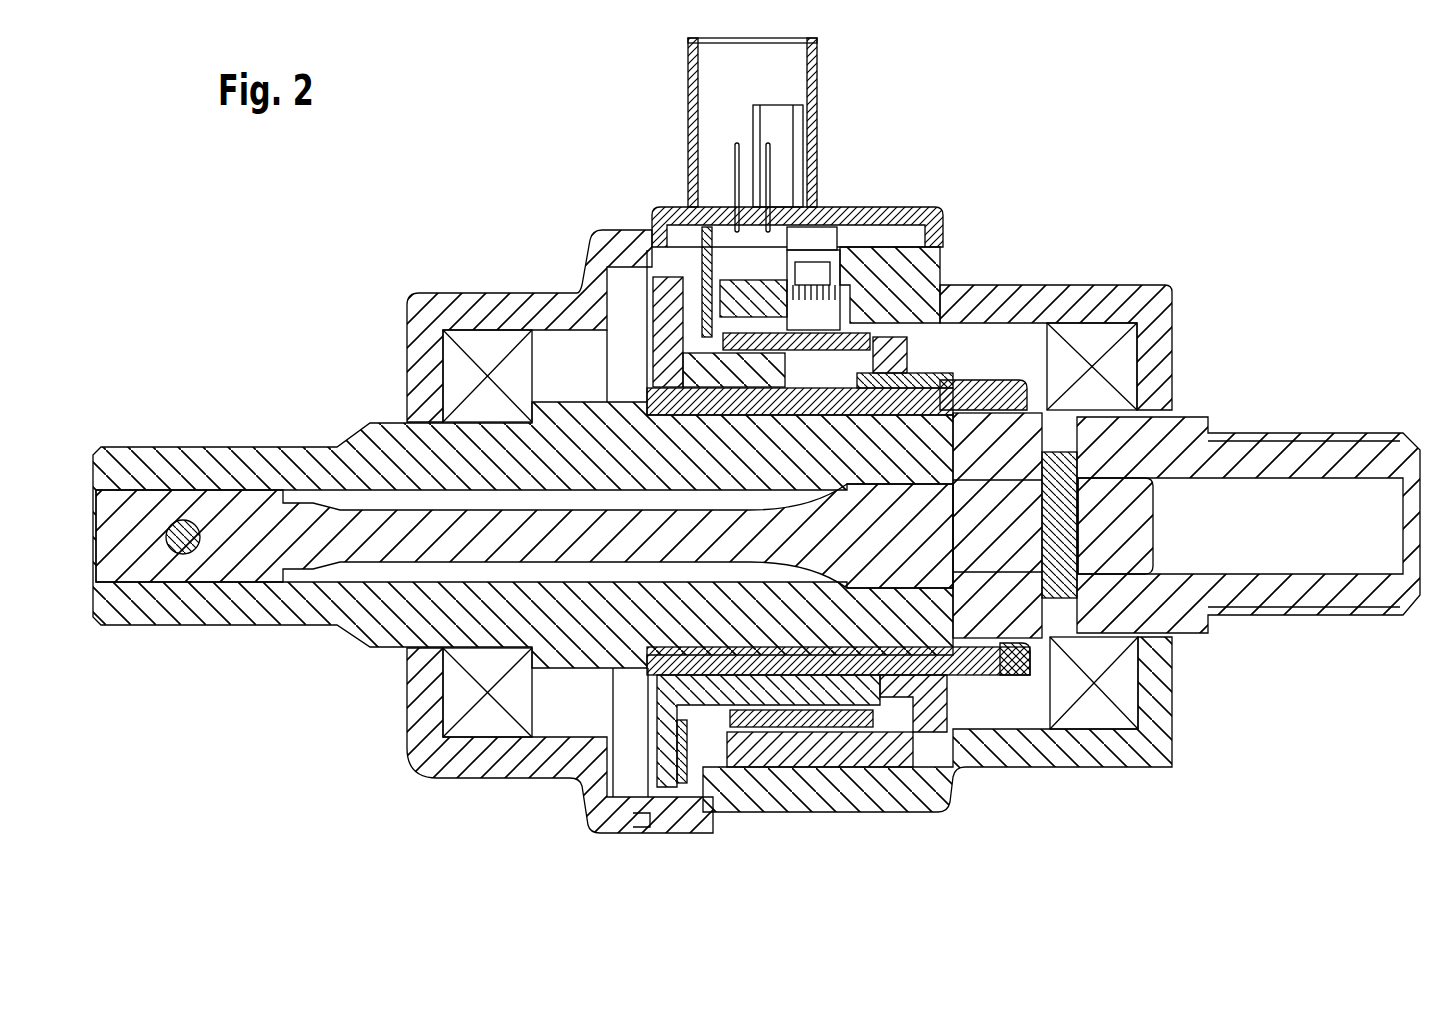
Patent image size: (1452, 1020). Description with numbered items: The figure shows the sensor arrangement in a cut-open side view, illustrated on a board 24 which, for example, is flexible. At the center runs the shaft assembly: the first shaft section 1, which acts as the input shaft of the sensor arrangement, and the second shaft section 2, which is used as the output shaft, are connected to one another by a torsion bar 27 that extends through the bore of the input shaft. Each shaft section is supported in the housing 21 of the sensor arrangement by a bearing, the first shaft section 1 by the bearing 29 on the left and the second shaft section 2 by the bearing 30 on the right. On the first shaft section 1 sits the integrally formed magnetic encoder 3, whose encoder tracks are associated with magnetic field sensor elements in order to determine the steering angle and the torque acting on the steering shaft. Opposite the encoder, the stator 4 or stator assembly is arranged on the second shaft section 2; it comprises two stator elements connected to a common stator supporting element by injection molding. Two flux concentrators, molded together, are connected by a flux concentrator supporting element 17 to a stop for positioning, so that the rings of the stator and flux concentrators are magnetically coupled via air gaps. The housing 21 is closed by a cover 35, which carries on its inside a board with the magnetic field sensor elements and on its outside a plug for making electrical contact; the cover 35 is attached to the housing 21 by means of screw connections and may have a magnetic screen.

The first shaft section 1 is at (293, 467).
The second shaft section 2 is at (1328, 457).
The magnetic encoder 3 is at (653, 303).
The stator 4 is at (912, 300).
The flux concentrator supporting element 17 is at (713, 283).
The housing 21 is at (1127, 300).
The board 24 is at (731, 233).
The torsion bar 27 is at (234, 517).
The bearing 29 is at (487, 343).
The bearing 30 is at (1090, 337).
The cover 35 is at (544, 310).